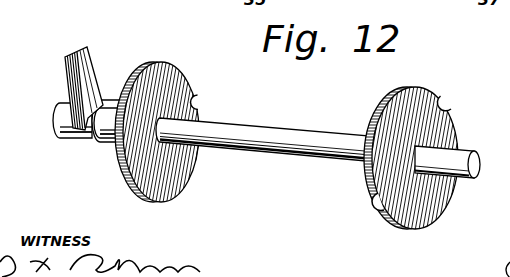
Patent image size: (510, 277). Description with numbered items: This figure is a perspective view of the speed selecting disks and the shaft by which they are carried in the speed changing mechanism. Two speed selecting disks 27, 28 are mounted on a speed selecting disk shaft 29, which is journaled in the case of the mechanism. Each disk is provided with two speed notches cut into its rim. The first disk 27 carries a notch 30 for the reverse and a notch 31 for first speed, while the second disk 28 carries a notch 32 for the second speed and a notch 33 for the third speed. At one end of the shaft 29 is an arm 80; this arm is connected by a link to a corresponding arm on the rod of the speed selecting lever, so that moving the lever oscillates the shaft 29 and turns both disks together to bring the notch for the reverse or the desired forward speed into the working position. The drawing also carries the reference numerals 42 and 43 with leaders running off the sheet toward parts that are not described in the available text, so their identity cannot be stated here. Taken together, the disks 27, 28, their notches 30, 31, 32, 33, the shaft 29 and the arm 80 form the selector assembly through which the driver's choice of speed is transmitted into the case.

The speed selecting disk 27 is at (155, 63).
The speed selecting disk 28 is at (417, 229).
The speed selecting disk shaft 29 is at (275, 140).
The notch 30 is at (118, 140).
The notch 31 is at (201, 108).
The notch 32 is at (382, 203).
The notch 33 is at (441, 100).
The arm 80 is at (68, 73).
The element 42 is at (509, 60).
The element 43 is at (509, 34).